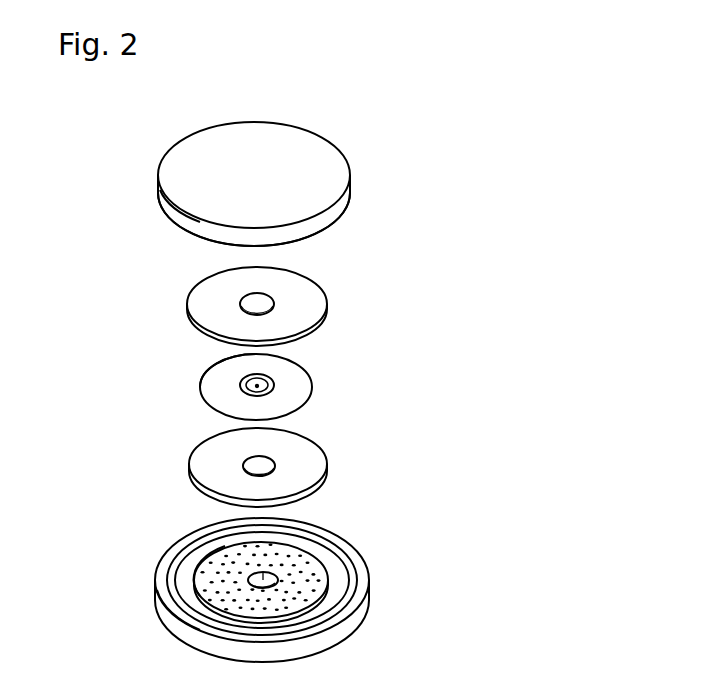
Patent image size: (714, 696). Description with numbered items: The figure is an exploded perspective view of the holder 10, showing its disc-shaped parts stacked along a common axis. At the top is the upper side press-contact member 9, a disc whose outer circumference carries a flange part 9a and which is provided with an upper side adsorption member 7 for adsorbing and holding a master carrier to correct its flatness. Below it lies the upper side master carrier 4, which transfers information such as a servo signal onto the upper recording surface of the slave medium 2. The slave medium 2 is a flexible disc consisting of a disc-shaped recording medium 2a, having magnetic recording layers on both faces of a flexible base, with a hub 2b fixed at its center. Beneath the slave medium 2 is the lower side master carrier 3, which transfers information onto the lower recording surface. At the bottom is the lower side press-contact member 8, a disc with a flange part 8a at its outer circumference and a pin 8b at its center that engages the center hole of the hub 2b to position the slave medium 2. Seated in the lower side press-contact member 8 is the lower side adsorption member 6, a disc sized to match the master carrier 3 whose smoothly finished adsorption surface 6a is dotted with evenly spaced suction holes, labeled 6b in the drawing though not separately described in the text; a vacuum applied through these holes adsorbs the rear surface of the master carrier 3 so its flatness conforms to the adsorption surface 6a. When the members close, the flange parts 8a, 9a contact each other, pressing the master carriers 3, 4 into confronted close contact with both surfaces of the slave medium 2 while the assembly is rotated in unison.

The holder 10 is at (101, 130).
The upper side press-contact member 9 is at (318, 150).
The flange part 9a is at (170, 221).
The upper side adsorption member 7 is at (338, 226).
The upper side master carrier 4 is at (310, 297).
The slave medium 2 is at (305, 382).
The recording medium 2a is at (215, 377).
The hub 2b is at (242, 387).
The lower side master carrier 3 is at (317, 467).
The lower side press-contact member 8 is at (368, 602).
The flange part 8a is at (177, 618).
The pin 8b is at (268, 584).
The lower side adsorption member 6 is at (323, 558).
The adsorption surface 6a is at (200, 562).
The collector body 6b is at (208, 580).